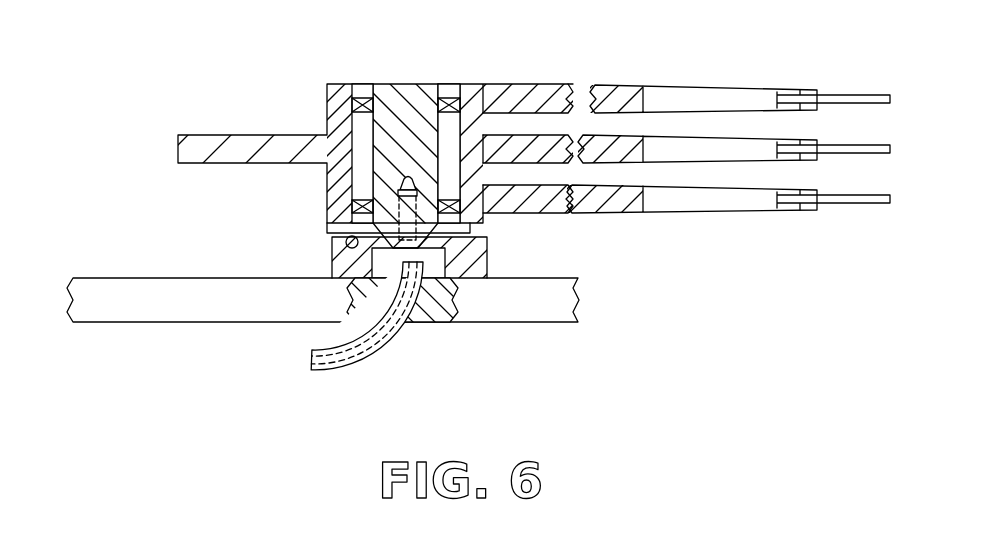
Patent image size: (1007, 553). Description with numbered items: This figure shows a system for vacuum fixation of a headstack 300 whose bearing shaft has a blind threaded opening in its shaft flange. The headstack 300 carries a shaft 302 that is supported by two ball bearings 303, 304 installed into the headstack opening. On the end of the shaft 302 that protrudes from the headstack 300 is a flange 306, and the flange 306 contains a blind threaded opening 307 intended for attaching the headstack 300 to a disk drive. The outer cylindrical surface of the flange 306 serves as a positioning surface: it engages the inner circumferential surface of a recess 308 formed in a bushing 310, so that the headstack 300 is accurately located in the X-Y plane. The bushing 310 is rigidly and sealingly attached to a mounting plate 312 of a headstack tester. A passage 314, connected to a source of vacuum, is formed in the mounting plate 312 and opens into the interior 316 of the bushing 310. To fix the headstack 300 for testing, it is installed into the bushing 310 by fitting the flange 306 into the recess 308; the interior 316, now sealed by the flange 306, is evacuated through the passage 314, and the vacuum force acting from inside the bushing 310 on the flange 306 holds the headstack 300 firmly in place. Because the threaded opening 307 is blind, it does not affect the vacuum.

The headstack 300 is at (712, 66).
The shaft 302 is at (419, 76).
The ball bearing 303 is at (362, 84).
The ball bearing 304 is at (362, 205).
The flange 306 is at (462, 233).
The blind threaded opening 307 is at (352, 223).
The recess 308 is at (353, 248).
The bushing 310 is at (505, 258).
The mounting plate 312 is at (167, 308).
The passage 314 is at (357, 370).
The interior 316 is at (435, 318).